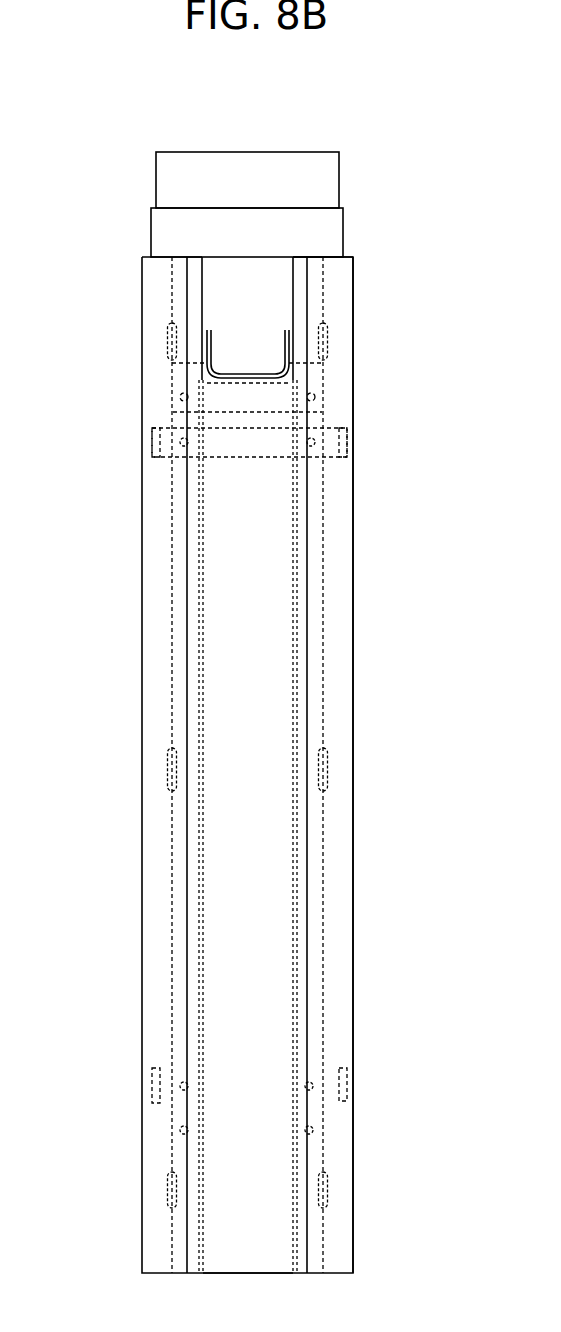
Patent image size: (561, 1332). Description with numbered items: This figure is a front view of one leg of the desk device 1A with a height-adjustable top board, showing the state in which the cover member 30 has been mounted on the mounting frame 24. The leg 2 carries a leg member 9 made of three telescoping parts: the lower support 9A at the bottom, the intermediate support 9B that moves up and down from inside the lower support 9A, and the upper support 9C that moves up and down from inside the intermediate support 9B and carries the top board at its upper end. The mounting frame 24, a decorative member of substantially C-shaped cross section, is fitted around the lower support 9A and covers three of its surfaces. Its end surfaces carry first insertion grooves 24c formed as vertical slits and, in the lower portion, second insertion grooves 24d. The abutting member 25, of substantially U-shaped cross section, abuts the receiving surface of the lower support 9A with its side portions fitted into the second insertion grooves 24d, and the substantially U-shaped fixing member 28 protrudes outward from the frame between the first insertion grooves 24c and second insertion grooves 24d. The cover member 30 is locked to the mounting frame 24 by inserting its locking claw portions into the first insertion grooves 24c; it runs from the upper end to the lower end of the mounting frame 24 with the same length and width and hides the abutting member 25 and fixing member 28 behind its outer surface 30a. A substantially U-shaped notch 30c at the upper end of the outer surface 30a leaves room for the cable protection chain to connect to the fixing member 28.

The desk device 1A is at (361, 149).
The upper support 9C is at (337, 175).
The intermediate support 9B is at (337, 222).
The leg 2 is at (142, 721).
The mounting frame 24 is at (142, 866).
The first insertion grooves 24c is at (168, 333).
The second insertion grooves 24d is at (150, 440).
The leg member 9 is at (353, 843).
The lower support 9A is at (343, 917).
The fixing member 28 is at (292, 386).
The abutting member 25 is at (262, 452).
The cover member 30 is at (337, 535).
The outer surface 30a is at (265, 607).
The notch 30c is at (262, 378).